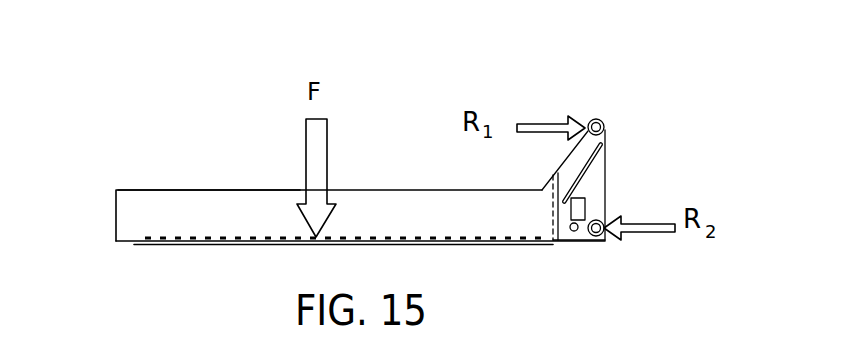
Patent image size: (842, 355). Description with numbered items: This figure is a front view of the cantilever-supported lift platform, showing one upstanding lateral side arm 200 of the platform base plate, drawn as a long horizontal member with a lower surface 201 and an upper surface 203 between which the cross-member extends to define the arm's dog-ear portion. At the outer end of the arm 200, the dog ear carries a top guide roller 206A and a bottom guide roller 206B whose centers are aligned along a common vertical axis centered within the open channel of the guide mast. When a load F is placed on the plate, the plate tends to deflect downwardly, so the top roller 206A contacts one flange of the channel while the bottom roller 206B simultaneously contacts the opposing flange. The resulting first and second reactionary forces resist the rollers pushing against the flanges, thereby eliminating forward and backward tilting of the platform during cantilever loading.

The lateral side arm 200 is at (360, 185).
The lower surface of arm 201 is at (133, 190).
The upper surface of arm 203 is at (127, 244).
The top guide roller 206A is at (603, 121).
The bottom guide roller 206B is at (603, 236).